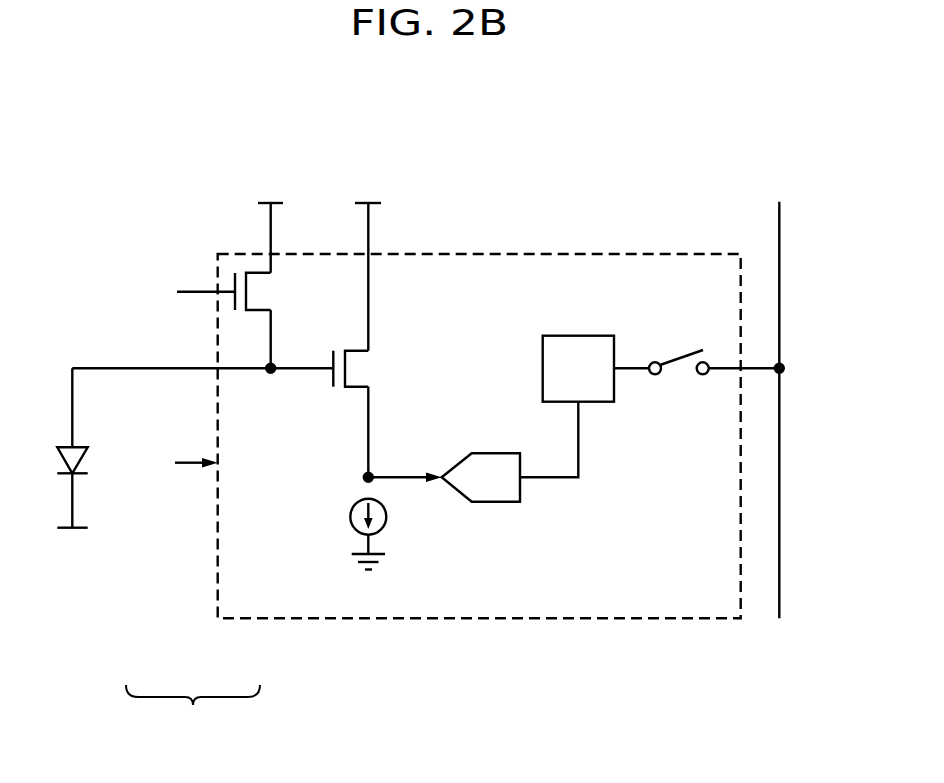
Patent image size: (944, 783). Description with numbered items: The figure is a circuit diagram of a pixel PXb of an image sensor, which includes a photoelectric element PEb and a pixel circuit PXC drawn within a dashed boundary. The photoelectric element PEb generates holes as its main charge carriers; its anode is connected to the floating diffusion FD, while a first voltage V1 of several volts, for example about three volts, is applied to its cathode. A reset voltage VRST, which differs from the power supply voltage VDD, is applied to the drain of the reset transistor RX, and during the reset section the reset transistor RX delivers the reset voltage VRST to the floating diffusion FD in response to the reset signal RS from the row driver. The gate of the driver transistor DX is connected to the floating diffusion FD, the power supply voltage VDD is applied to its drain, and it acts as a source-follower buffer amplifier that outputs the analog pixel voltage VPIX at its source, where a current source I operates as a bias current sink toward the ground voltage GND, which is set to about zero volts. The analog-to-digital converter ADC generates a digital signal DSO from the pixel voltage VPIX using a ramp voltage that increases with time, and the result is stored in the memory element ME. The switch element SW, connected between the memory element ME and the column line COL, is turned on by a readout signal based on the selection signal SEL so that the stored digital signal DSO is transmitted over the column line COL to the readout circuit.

The pixel circuit PXC is at (245, 618).
The photoelectric element PEb is at (88, 480).
The pixel PXb is at (193, 711).
The reset transistor RX is at (268, 321).
The driver transistor DX is at (367, 414).
The reset signal RS is at (186, 292).
The floating diffusion FD is at (202, 383).
The reset voltage VRST is at (271, 222).
The power supply voltage VDD is at (368, 261).
The pixel voltage VPIX is at (403, 464).
The analog-to-digital converter ADC is at (493, 452).
The memory element ME is at (596, 369).
The switch element SW is at (714, 348).
The column line COL is at (779, 395).
The digital signal DSO is at (807, 369).
The current source I is at (377, 526).
The ground voltage GND is at (369, 578).
The selection signal SEL is at (171, 464).
The first voltage V1 is at (72, 545).